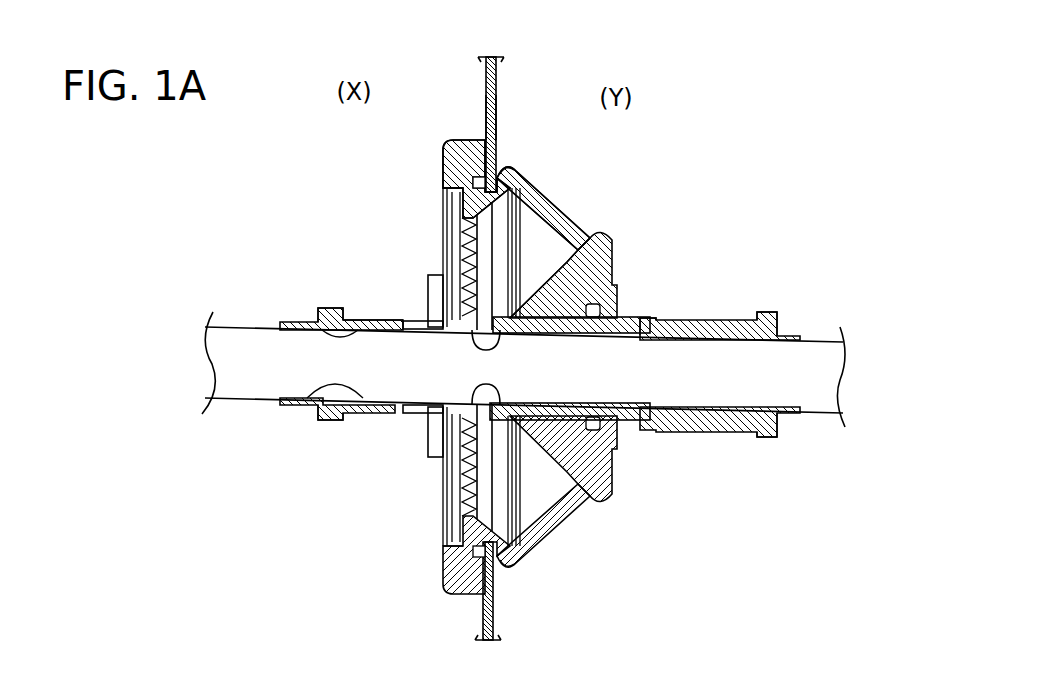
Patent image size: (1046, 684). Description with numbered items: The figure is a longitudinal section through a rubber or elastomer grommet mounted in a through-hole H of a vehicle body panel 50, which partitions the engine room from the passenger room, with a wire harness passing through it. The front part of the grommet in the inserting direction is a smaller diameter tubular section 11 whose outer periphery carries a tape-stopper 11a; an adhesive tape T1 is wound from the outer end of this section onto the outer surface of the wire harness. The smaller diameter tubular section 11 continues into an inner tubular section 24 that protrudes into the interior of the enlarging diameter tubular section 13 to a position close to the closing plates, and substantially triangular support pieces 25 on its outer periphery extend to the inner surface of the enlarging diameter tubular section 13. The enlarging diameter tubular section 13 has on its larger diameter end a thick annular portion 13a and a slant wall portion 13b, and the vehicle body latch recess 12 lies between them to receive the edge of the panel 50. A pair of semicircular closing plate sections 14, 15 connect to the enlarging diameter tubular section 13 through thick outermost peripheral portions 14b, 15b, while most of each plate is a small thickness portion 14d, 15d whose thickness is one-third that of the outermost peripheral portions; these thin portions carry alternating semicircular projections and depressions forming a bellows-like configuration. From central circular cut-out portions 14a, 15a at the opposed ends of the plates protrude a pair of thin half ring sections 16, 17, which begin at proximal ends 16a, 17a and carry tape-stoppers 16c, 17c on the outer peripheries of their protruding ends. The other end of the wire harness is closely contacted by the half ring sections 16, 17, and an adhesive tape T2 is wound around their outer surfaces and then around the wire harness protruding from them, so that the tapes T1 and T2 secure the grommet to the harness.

The vehicle body panel 50 is at (498, 82).
The vehicle body latch recess 12 is at (485, 116).
The enlarging diameter tubular section 13 is at (550, 205).
The annular portion 13a is at (462, 140).
The slant wall portion 13b is at (540, 198).
The through-hole H is at (512, 165).
The semicircular closing plate section 14 is at (500, 250).
The central circular cut-out portion 14a is at (548, 316).
The outermost peripheral portion 14b is at (448, 240).
The small thickness portion 14d is at (442, 307).
The support piece 25 is at (550, 290).
The half ring section 16 is at (318, 326).
The proximal end 16a is at (440, 323).
The tape-stopper 16c is at (330, 318).
The adhesive tape T2 is at (376, 322).
The smaller diameter tubular section 11 is at (718, 316).
The tape-stopper 11a is at (650, 316).
The semicircular closing plate section 15 is at (543, 548).
The central circular cut-out portion 15a is at (593, 500).
The outermost peripheral portion 15b is at (440, 505).
The small thickness portion 15d is at (437, 481).
The inner tubular section 24 is at (560, 433).
The half ring section 17 is at (308, 408).
The proximal end 17a is at (426, 410).
The tape-stopper 17c is at (326, 420).
The adhesive tape T1 is at (733, 432).